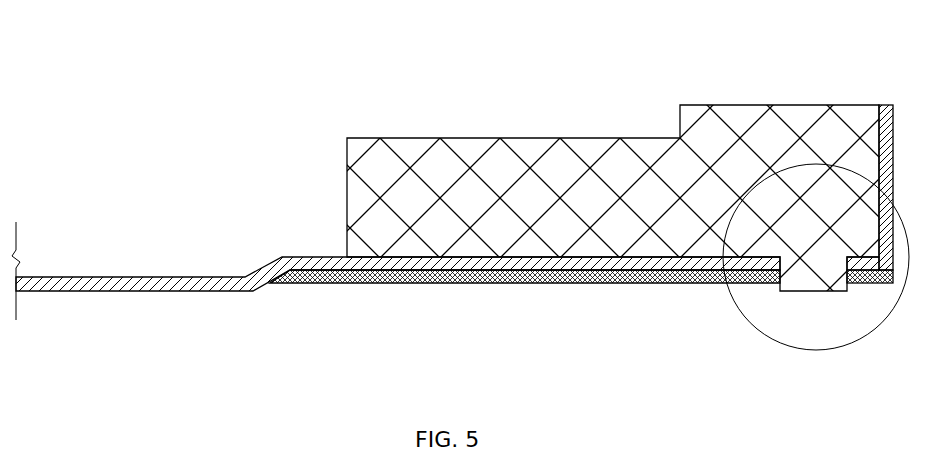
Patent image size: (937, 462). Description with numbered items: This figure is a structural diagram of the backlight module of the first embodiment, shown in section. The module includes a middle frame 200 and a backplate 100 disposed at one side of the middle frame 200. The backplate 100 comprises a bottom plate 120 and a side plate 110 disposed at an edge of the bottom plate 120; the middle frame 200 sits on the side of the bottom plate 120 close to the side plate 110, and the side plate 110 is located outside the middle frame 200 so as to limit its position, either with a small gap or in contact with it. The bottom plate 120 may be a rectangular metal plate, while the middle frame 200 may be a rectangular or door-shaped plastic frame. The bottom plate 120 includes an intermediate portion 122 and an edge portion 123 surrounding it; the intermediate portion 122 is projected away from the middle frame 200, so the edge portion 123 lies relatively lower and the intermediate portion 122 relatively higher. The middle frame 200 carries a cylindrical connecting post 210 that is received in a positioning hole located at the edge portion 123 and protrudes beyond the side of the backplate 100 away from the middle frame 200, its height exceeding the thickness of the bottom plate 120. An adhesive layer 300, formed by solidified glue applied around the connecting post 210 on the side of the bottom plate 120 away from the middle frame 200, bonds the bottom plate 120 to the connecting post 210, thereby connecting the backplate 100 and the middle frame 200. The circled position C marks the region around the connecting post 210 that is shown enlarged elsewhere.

The backplate 100 is at (452, 204).
The middle frame 200 is at (450, 198).
The side plate 110 is at (880, 105).
The bottom plate 120 is at (447, 324).
The intermediate portion 122 is at (128, 292).
The edge portion 123 is at (328, 281).
The adhesive layer 300 is at (588, 280).
The connecting post 210 is at (825, 288).
The position C is at (735, 310).